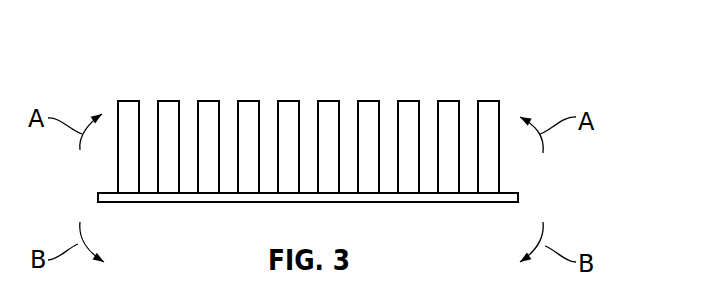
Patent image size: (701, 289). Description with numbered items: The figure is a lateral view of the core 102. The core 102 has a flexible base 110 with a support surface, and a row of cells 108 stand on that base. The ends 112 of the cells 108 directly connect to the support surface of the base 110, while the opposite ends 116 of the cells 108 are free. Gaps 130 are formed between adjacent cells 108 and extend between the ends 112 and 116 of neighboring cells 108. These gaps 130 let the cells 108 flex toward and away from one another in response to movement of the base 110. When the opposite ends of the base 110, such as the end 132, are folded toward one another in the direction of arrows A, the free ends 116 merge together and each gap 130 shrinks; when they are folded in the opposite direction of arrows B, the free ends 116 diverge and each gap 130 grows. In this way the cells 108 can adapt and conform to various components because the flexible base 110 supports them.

The core 102 is at (497, 63).
The cells 108 is at (118, 118).
The base 110 is at (517, 193).
The ends of the cells 112 is at (118, 190).
The free ends of the cells 116 is at (128, 101).
The gaps 130 is at (147, 105).
The end of the base 132 is at (98, 199).